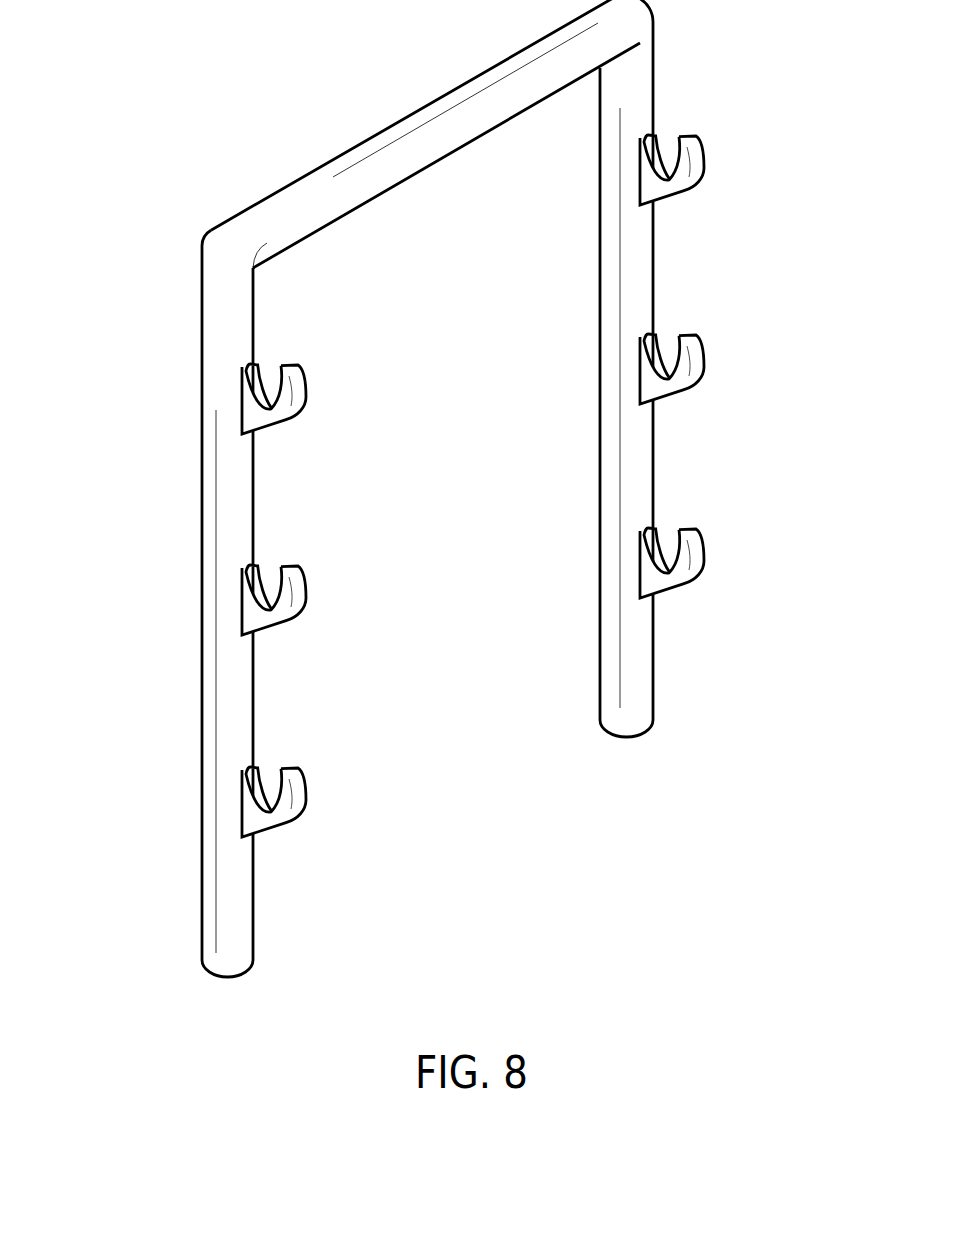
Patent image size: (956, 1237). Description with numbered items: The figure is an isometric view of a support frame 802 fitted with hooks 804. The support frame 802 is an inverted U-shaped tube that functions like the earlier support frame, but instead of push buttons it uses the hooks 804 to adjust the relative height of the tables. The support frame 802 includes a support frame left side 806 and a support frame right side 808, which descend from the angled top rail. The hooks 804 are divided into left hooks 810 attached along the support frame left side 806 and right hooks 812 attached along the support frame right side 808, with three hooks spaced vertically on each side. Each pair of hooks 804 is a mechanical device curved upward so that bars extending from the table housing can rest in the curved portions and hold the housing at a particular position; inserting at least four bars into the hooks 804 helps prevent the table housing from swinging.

The support frame 802 is at (262, 220).
The hooks 804 is at (297, 603).
The support frame left side 806 is at (223, 508).
The support frame right side 808 is at (640, 275).
The left hooks 810 is at (297, 396).
The right hooks 812 is at (697, 162).